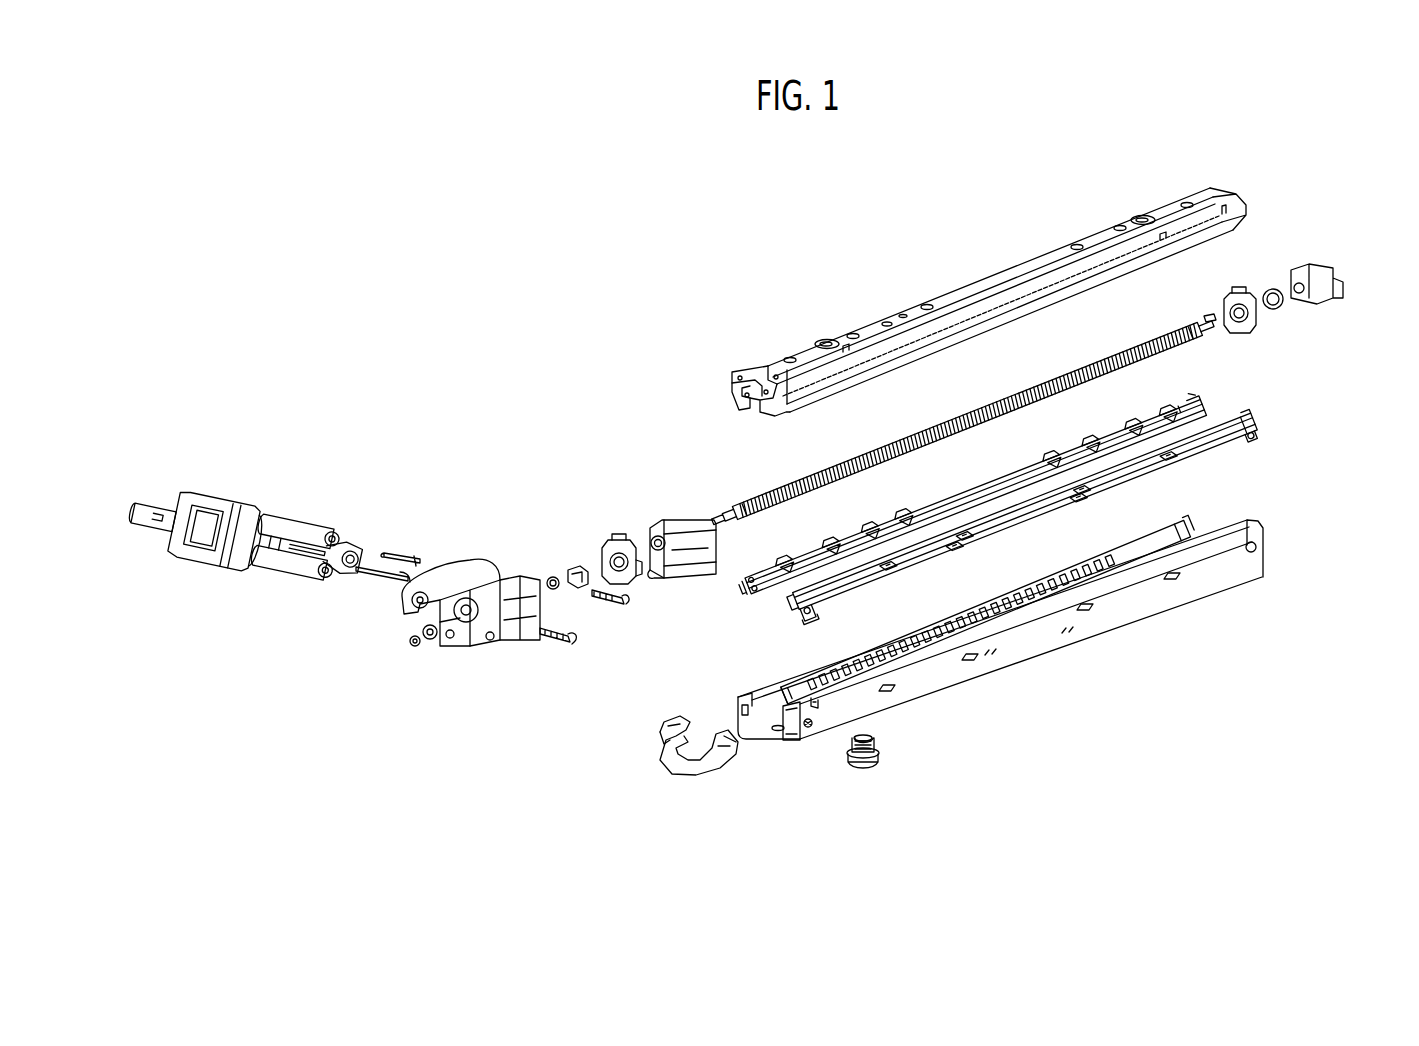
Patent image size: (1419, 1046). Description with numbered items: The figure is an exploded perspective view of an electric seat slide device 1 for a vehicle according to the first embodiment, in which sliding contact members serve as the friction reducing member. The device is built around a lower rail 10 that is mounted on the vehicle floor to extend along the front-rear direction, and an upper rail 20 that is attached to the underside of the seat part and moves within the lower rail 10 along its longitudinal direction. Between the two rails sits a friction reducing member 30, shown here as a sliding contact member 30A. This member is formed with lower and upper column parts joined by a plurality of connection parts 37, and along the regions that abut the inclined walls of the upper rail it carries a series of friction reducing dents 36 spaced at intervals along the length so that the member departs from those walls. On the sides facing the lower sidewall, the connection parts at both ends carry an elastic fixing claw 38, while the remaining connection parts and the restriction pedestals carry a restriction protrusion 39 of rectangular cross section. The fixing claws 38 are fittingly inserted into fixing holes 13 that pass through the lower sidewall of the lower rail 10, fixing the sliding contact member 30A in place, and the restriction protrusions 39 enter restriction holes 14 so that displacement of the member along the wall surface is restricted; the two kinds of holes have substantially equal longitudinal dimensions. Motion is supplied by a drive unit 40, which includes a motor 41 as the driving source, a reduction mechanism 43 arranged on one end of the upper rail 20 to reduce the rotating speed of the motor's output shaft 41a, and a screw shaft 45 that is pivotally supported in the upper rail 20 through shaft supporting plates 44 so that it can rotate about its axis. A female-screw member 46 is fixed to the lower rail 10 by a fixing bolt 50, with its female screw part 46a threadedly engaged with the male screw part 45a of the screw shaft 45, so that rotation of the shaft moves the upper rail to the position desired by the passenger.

The electric seat slide device 1 is at (584, 300).
The lower rail 10 is at (1052, 648).
The fixing hole 13 is at (1253, 553).
The restriction hole 14 is at (1174, 581).
The upper rail 20 is at (973, 276).
The friction reducing member 30 is at (1055, 493).
The sliding contact member 30A is at (1204, 406).
The friction reducing dent 36 is at (1123, 437).
The connection part 37 is at (1077, 502).
The fixing claw 38 is at (1250, 434).
The restriction protrusion 39 is at (1168, 462).
The drive unit 40 is at (331, 551).
The motor 41 is at (232, 512).
The output shaft 41a is at (370, 576).
The reduction mechanism 43 is at (502, 632).
The shaft supporting plate 44 is at (608, 538).
The screw shaft 45 is at (774, 496).
The male screw part 45a is at (906, 432).
The female-screw member 46 is at (668, 524).
The female screw part 46a is at (656, 550).
The fixing bolt 50 is at (865, 770).